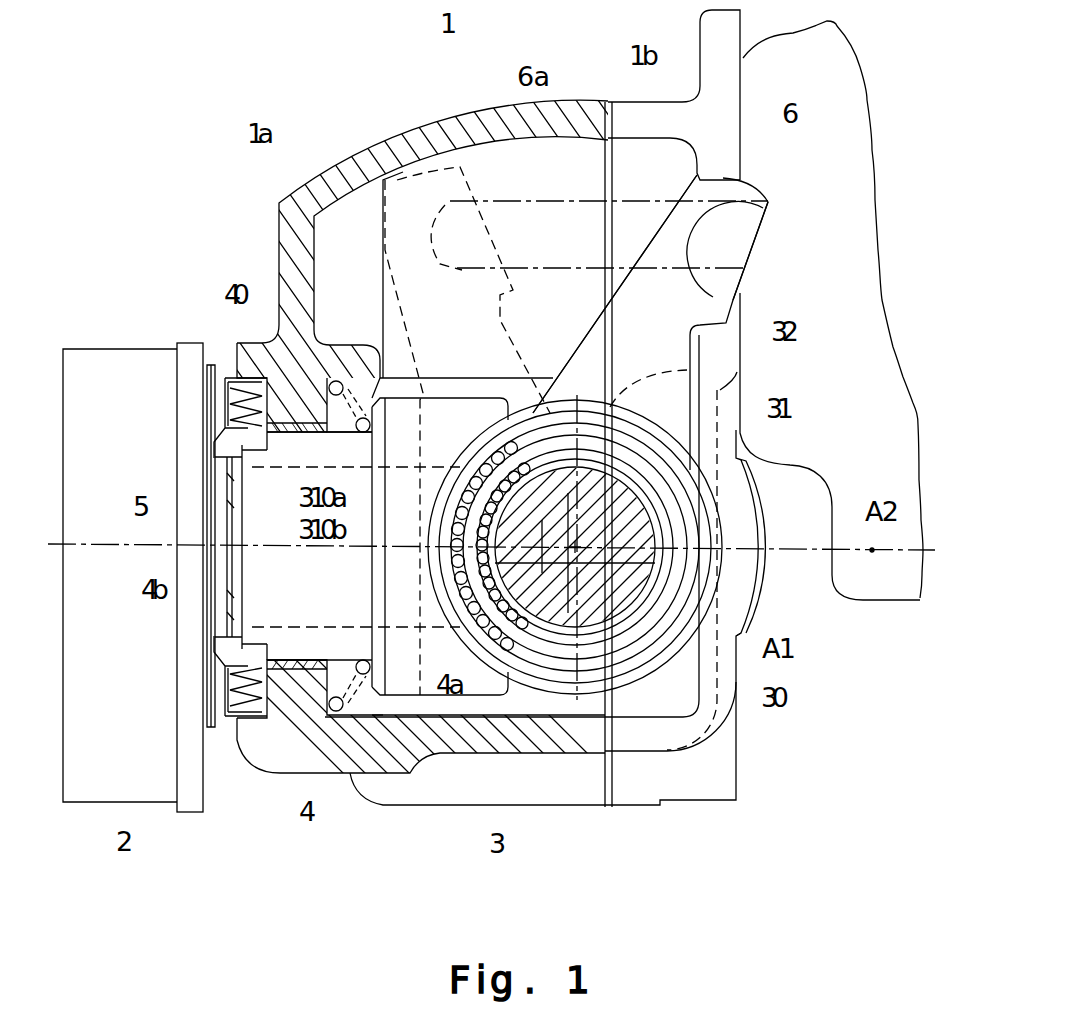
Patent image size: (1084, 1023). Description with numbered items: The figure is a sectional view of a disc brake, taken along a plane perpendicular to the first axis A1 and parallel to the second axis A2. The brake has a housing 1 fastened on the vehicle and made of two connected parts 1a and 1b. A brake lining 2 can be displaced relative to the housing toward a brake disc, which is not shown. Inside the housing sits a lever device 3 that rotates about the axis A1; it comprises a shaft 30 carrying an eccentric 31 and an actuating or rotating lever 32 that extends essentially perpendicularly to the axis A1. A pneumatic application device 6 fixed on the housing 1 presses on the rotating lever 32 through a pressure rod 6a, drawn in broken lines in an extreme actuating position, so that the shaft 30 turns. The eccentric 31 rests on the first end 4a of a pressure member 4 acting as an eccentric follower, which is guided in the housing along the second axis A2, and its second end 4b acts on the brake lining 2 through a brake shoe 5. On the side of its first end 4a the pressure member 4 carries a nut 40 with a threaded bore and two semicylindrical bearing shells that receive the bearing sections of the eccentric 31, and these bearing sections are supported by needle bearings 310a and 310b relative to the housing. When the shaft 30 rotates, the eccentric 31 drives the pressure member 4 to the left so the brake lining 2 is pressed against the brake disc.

The housing 1 is at (457, 32).
The housing part 1a is at (323, 178).
The housing part 1b is at (650, 107).
The brake lining 2 is at (124, 800).
The lever device 3 is at (546, 500).
The pressure member 4 is at (325, 684).
The first end 4a is at (430, 597).
The second end 4b is at (236, 557).
The brake shoe 5 is at (222, 499).
The pneumatic application device 6 is at (806, 128).
The pressure rod 6a is at (524, 198).
The shaft 30 is at (600, 622).
The eccentric 31 is at (630, 460).
The actuating or rotating lever 32 is at (697, 300).
The nut 40 is at (287, 453).
The needle bearing 310a is at (448, 482).
The needle bearing 310b is at (441, 546).
The first axis A1 is at (577, 549).
The second axis A2 is at (872, 550).